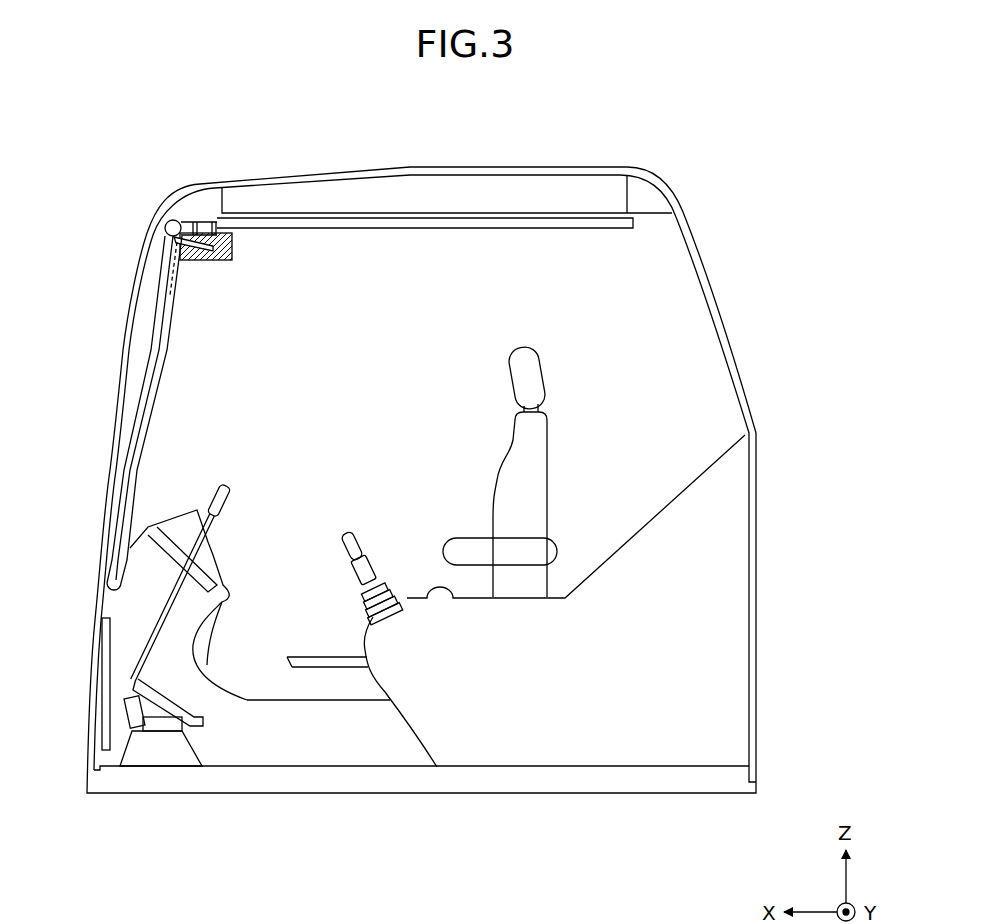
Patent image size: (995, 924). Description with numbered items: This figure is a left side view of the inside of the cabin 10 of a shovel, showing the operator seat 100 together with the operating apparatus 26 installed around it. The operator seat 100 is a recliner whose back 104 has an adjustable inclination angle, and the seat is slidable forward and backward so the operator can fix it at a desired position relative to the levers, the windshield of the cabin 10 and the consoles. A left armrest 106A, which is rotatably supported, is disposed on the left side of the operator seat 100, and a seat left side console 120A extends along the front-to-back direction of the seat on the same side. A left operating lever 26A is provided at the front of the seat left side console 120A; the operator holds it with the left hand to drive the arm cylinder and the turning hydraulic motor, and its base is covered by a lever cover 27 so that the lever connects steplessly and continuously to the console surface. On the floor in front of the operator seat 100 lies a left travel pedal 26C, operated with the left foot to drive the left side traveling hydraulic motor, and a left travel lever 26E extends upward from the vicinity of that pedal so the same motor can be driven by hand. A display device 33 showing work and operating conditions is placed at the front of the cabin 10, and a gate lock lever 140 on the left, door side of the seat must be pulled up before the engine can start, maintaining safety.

The cabin 10 is at (690, 207).
The operator seat 100 is at (618, 590).
The back 104 is at (540, 468).
The left armrest 106A is at (500, 553).
The seat left side console 120A is at (427, 600).
The gate lock lever 140 is at (327, 665).
The lever cover 27 is at (398, 588).
The display device 33 is at (187, 520).
The operating apparatus 26 is at (194, 710).
The left travel lever 26E is at (133, 660).
The left travel pedal 26C is at (164, 703).
The left operating lever 26A is at (344, 536).